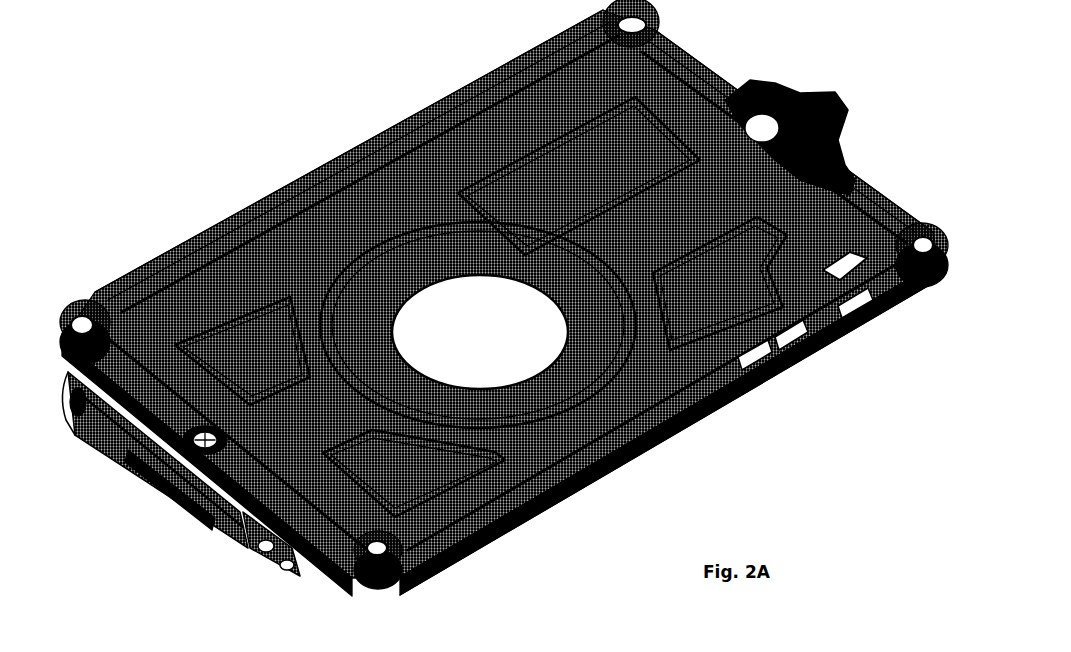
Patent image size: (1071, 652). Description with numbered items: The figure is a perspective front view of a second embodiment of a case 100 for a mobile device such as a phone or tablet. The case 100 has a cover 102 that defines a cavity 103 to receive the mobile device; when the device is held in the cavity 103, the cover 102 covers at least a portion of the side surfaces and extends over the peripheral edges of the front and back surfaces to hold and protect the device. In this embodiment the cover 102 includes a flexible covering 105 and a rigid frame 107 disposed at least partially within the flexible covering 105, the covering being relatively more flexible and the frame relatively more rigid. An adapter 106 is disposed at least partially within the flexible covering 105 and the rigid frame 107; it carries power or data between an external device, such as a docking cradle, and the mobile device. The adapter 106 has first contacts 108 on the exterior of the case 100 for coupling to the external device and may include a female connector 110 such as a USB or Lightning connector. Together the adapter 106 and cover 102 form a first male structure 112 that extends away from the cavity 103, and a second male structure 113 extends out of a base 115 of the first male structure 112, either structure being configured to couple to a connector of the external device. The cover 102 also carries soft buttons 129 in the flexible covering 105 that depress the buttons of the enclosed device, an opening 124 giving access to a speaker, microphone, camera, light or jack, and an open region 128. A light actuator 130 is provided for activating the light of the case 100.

The case 100 is at (297, 104).
The cover 102 is at (672, 438).
The cavity 103 is at (620, 140).
The flexible covering 105 is at (470, 534).
The adapter 106 is at (210, 530).
The rigid frame 107 is at (160, 327).
The first contacts 108 is at (158, 500).
The female connector 110 is at (262, 560).
The first male structure 112 is at (78, 440).
The second male structure 113 is at (118, 460).
The base 115 is at (282, 578).
The opening 124 is at (868, 215).
The open region 128 is at (497, 335).
The soft buttons 129 is at (852, 318).
The light actuator 130 is at (205, 424).